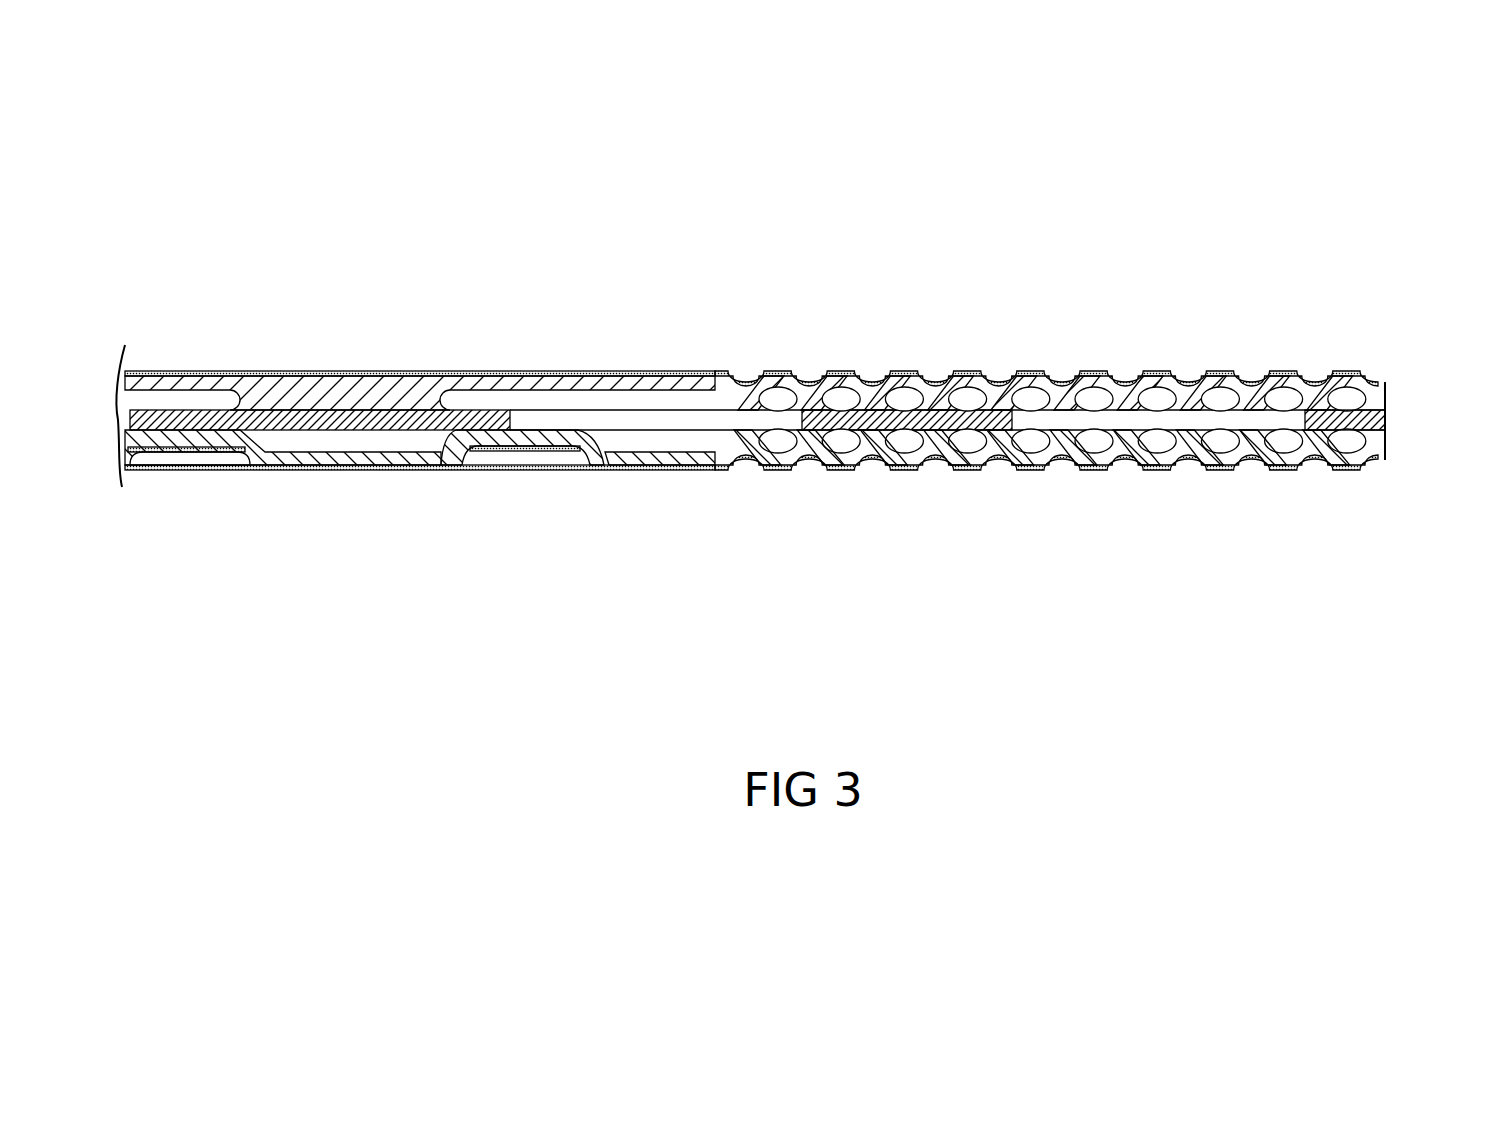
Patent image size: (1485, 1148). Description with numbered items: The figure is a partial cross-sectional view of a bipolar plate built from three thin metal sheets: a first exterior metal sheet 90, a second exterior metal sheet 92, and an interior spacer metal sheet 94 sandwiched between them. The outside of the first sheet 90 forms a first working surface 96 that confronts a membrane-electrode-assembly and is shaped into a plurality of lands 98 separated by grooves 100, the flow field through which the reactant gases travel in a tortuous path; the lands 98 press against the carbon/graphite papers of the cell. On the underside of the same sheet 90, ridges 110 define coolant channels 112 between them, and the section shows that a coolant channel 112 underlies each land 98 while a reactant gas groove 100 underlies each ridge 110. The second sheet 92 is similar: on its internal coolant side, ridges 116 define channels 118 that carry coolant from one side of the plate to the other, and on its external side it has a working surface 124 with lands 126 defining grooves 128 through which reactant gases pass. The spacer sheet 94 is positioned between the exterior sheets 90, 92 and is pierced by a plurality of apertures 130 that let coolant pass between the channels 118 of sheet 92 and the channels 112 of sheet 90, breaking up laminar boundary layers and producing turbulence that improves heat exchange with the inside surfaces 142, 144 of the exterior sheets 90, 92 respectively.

The first exterior metal sheet 90 is at (252, 388).
The second exterior metal sheet 92 is at (341, 452).
The interior spacer metal sheet 94 is at (1388, 418).
The first working surface 96 is at (673, 371).
The lands 98 is at (780, 372).
The grooves 100 is at (810, 375).
The ridges 110 is at (740, 406).
The channels 112 is at (905, 387).
The ridges 116 is at (762, 438).
The channels 118 is at (838, 440).
The working surface 124 is at (622, 473).
The lands 126 is at (902, 470).
The grooves 128 is at (998, 467).
The apertures 130 is at (1082, 420).
The inside surface 142 is at (563, 393).
The inside surface 144 is at (650, 437).